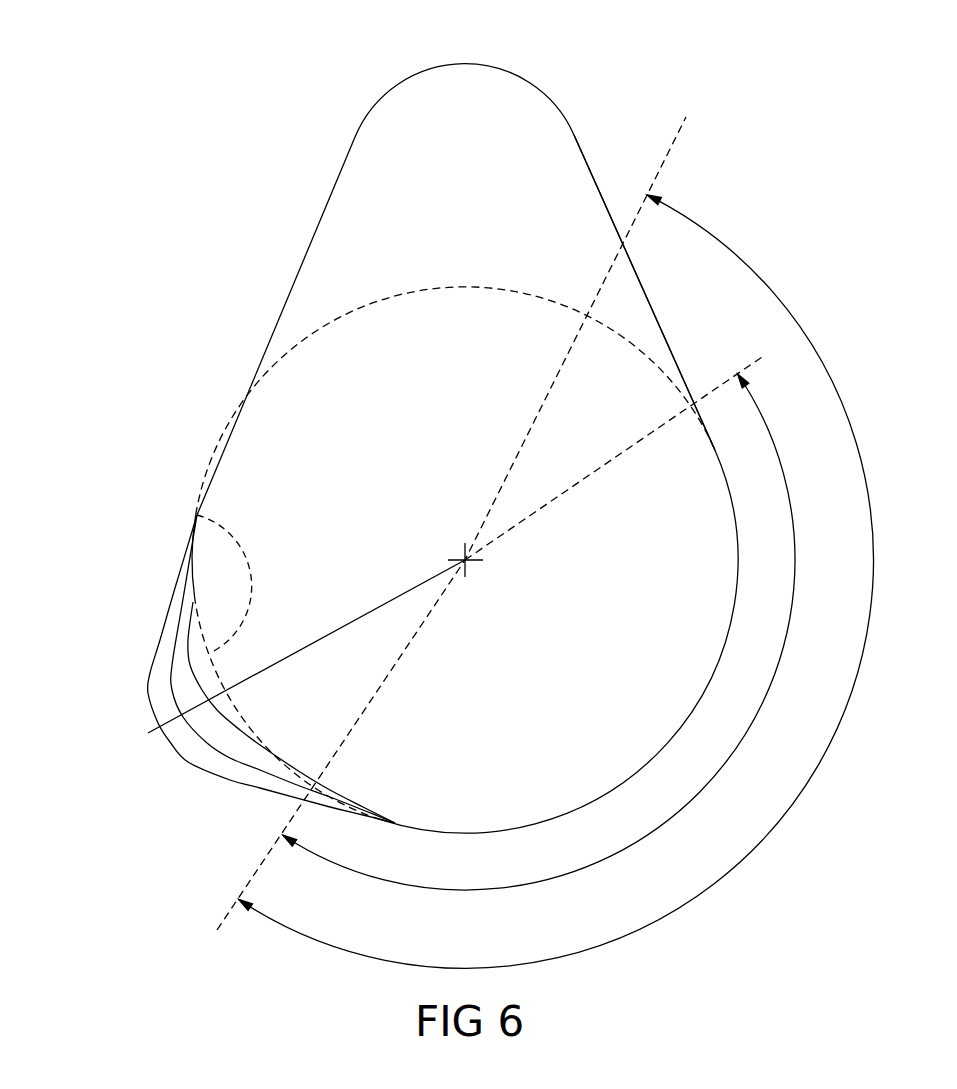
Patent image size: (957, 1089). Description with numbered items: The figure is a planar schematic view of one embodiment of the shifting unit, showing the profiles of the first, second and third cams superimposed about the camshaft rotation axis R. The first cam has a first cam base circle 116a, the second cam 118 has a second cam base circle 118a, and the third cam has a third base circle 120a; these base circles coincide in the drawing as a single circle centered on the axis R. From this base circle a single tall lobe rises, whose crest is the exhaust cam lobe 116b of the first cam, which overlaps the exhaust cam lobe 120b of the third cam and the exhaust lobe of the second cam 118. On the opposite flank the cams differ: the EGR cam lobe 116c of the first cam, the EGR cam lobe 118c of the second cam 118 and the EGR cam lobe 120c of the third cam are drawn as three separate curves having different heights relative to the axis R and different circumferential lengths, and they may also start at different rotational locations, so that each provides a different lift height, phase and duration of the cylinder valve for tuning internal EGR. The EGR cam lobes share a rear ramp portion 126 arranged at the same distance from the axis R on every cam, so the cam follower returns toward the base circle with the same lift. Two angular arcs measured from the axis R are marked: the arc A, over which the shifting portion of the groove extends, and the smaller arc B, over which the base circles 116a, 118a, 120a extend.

The exhaust cam lobe 116b is at (467, 63).
The second cam 118 is at (417, 325).
The exhaust cam lobe 120b is at (322, 208).
The rear ramp portion 126 is at (655, 308).
The second cam base circle 118a is at (547, 822).
The first cam base circle 116a is at (146, 580).
The third base circle 120a is at (197, 515).
The EGR cam lobe 116c is at (188, 643).
The EGR cam lobe 118c is at (168, 742).
The EGR cam lobe 120c is at (187, 762).
The camshaft rotation axis R is at (456, 523).
The arc A is at (556, 581).
The arc B is at (539, 632).